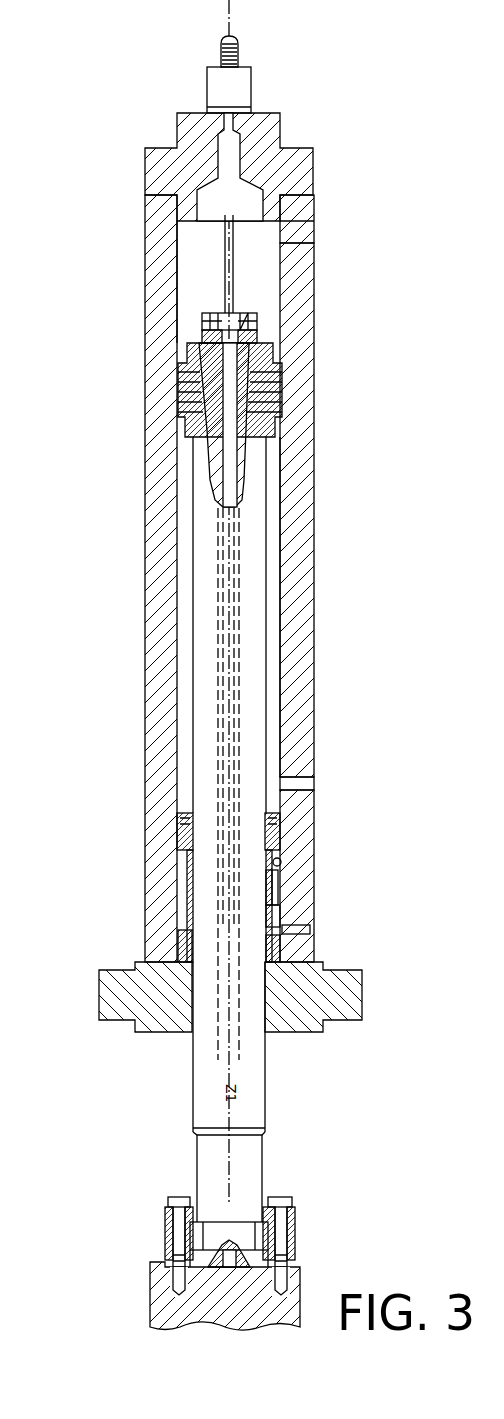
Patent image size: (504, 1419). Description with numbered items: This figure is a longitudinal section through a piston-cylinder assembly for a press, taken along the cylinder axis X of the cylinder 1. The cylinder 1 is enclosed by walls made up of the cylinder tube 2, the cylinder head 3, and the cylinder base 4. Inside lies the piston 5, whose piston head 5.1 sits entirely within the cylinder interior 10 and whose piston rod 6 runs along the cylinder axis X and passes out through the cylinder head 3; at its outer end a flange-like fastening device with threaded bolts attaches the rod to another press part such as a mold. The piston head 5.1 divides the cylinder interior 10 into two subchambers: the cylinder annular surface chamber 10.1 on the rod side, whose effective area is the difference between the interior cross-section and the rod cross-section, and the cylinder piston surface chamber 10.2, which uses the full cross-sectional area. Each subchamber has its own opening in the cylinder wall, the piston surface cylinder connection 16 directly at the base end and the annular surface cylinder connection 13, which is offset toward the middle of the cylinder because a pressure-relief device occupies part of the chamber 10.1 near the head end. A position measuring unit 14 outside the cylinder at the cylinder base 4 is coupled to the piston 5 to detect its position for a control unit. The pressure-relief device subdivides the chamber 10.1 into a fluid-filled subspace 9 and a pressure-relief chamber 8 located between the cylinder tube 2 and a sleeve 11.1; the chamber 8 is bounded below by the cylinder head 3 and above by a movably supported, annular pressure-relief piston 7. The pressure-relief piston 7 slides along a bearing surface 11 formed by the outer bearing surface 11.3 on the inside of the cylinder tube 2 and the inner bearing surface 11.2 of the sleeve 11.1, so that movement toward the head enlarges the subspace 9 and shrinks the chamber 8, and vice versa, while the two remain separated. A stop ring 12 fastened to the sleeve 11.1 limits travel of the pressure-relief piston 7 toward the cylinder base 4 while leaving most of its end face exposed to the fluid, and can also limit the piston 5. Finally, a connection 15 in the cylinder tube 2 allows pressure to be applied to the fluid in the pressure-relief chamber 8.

The cylinder 1 is at (157, 240).
The cylinder tube 2 is at (305, 283).
The cylinder head 3 is at (345, 985).
The cylinder base 4 is at (298, 160).
The piston 5 is at (265, 368).
The piston head 5.1 is at (183, 405).
The piston rod 6 is at (258, 484).
The pressure-relief piston 7 is at (282, 820).
The pressure-relief chamber 8 is at (280, 914).
The subspace 9 is at (275, 623).
The cylinder interior 10 is at (255, 252).
The cylinder annular surface chamber 10.1 is at (183, 620).
The cylinder piston surface chamber 10.2 is at (198, 284).
The bearing surface 11 is at (180, 905).
The sleeve 11.1 is at (180, 935).
The inner bearing surface 11.2 is at (270, 890).
The outer bearing surface 11.3 is at (281, 860).
The stop ring 12 is at (183, 813).
The annular surface cylinder connection 13 is at (303, 782).
The position measuring unit 14 is at (213, 85).
The connection 15 is at (302, 930).
The piston surface cylinder connection 16 is at (302, 230).
The cylinder axis X is at (230, 3).